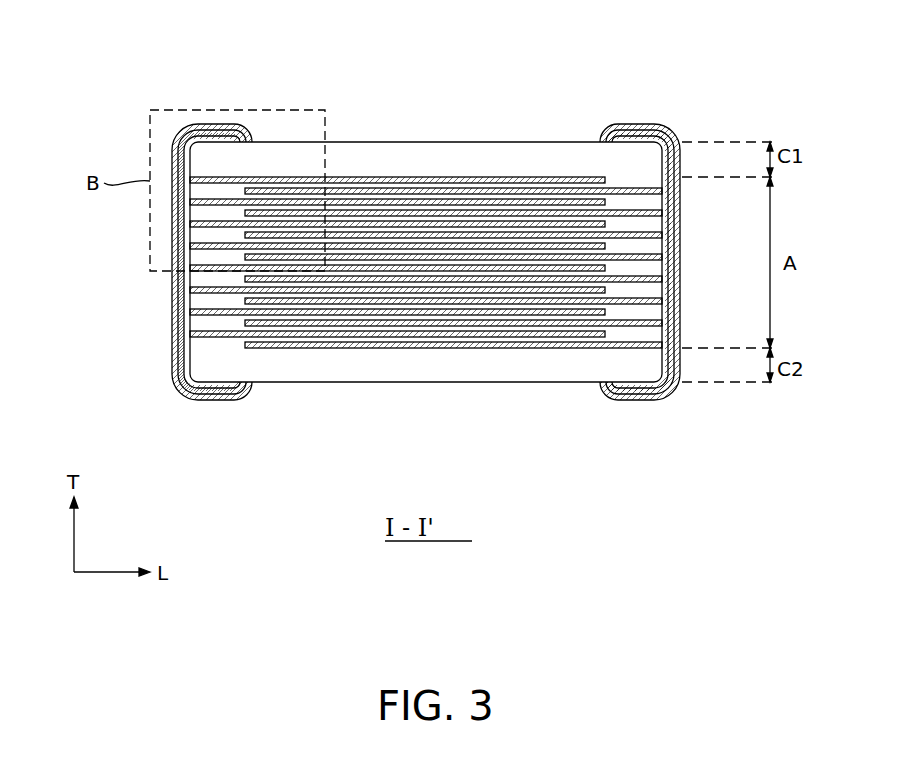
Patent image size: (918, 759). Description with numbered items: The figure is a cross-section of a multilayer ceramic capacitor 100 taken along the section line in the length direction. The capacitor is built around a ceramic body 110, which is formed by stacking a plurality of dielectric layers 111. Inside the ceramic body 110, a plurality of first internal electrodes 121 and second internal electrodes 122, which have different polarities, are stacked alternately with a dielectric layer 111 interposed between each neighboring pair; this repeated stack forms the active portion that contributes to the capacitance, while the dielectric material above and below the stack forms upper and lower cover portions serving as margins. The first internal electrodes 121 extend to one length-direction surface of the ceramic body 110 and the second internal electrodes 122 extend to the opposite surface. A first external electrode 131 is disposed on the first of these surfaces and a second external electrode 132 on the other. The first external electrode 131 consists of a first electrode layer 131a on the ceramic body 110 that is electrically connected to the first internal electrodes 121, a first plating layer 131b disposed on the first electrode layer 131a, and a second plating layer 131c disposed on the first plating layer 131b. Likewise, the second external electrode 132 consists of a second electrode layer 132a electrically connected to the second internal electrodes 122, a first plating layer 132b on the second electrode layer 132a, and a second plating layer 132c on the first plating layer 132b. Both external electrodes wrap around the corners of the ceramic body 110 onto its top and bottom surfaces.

The multilayer ceramic capacitor 100 is at (440, 41).
The ceramic body 110 is at (422, 142).
The dielectric layer 111 is at (645, 231).
The first internal electrode 121 is at (640, 189).
The second internal electrode 122 is at (638, 262).
The first external electrode 131 is at (357, 478).
The first electrode layer 131a is at (173, 388).
The first plating layer 131b is at (215, 399).
The second plating layer 131c is at (250, 388).
The second external electrode 132 is at (697, 478).
The second electrode layer 132a is at (665, 393).
The first plating layer 132b is at (632, 392).
The second plating layer 132c is at (598, 387).